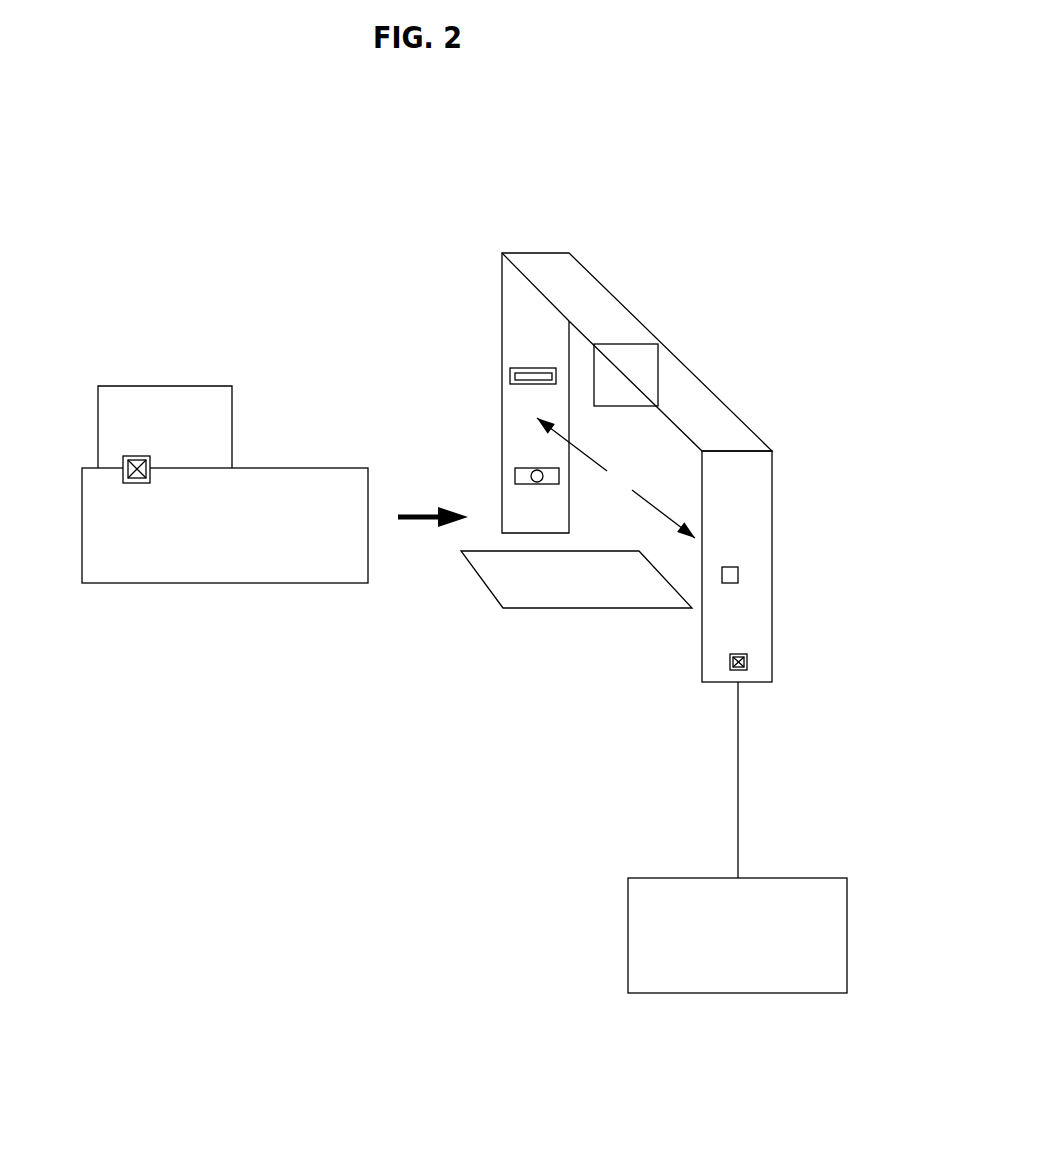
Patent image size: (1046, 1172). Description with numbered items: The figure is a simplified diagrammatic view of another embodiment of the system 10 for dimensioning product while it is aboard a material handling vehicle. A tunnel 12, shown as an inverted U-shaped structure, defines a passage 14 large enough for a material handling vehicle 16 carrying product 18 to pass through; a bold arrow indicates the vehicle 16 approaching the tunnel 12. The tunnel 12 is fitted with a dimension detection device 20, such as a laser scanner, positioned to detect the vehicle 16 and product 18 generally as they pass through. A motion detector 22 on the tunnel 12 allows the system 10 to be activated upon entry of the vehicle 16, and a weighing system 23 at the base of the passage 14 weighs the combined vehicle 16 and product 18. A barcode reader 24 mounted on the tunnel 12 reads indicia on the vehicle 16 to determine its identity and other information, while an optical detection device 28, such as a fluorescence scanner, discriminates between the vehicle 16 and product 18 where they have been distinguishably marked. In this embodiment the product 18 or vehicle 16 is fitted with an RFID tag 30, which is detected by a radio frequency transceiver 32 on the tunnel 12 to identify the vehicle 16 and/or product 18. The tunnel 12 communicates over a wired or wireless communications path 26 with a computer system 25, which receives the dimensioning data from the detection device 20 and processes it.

The system 10 is at (435, 782).
The tunnel 12 is at (772, 616).
The passage 14 is at (616, 478).
The material handling vehicle 16 is at (233, 585).
The product 18 is at (165, 385).
The dimension detection device 20 is at (661, 368).
The motion detector 22 is at (740, 569).
The weighing system 23 is at (639, 608).
The barcode reader 24 is at (515, 485).
The computer system 25 is at (847, 935).
The communications path 26 is at (739, 800).
The optical detection device 28 is at (515, 388).
The radio frequency identification (RFID) tag 30 is at (122, 460).
The radio frequency transceiver 32 is at (748, 657).